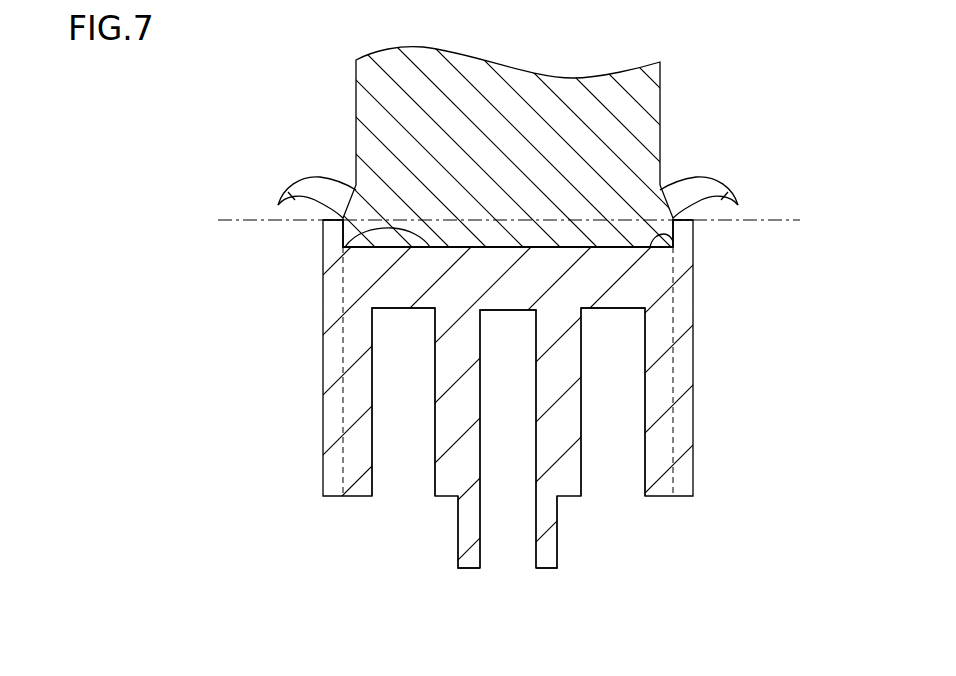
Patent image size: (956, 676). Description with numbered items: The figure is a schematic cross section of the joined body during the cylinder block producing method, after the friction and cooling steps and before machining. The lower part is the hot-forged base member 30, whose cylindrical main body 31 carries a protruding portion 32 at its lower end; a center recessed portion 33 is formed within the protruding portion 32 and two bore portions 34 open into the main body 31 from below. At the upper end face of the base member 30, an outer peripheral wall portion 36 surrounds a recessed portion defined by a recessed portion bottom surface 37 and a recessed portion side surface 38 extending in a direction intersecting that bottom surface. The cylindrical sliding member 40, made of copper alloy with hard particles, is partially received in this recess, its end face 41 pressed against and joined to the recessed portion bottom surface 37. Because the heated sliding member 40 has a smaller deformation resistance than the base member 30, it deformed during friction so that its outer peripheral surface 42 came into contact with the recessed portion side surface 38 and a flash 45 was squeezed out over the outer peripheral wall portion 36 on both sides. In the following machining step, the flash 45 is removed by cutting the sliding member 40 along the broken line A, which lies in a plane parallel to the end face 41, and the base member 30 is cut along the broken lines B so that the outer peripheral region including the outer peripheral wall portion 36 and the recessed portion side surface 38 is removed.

The base member 30 is at (478, 338).
The main body 31 is at (678, 432).
The protruding portion 32 is at (547, 548).
The center recessed portion 33 is at (482, 535).
The bore portions 34 is at (373, 460).
The outer peripheral wall portion 36 is at (322, 237).
The recessed portion bottom surface 37 is at (347, 243).
The recessed portion side surface 38 is at (656, 240).
The sliding member 40 is at (645, 104).
The end face 41 is at (595, 247).
The outer peripheral surface 42 is at (660, 130).
The flash 45 is at (320, 179).
The broken line A is at (760, 221).
The broken lines B is at (345, 368).